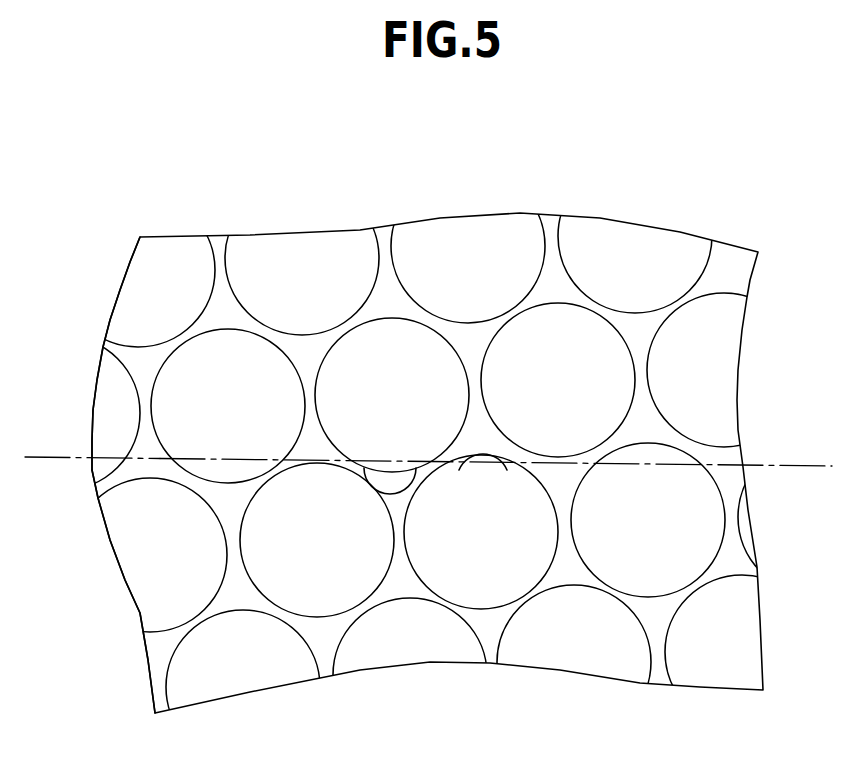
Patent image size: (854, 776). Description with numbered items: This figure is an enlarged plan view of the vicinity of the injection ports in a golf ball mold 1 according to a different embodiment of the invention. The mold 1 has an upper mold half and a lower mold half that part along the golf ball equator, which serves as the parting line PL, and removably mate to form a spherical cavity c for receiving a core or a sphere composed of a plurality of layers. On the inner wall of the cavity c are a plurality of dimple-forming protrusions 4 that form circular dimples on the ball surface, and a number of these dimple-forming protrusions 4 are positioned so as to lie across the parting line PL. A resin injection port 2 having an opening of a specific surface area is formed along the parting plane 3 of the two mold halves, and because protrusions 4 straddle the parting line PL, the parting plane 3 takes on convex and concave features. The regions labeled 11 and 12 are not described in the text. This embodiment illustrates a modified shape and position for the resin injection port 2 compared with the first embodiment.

The golf ball mold 1 is at (760, 220).
The resin injection port 2 is at (483, 443).
The parting plane 3 is at (728, 466).
The dimple-forming protrusion 4 is at (293, 260).
The upper member 11 is at (108, 348).
The lower member 12 is at (140, 613).
The cavity c is at (397, 297).
The parting line PL is at (82, 457).